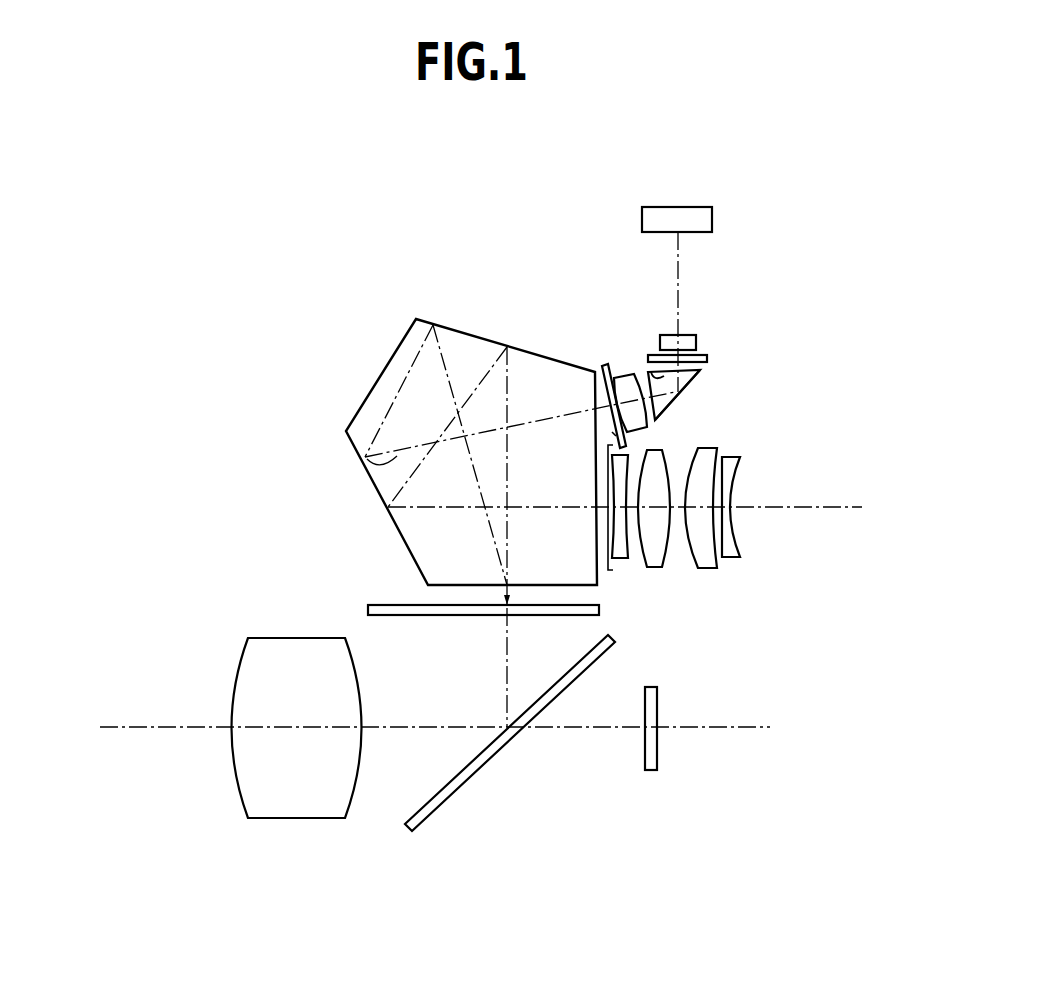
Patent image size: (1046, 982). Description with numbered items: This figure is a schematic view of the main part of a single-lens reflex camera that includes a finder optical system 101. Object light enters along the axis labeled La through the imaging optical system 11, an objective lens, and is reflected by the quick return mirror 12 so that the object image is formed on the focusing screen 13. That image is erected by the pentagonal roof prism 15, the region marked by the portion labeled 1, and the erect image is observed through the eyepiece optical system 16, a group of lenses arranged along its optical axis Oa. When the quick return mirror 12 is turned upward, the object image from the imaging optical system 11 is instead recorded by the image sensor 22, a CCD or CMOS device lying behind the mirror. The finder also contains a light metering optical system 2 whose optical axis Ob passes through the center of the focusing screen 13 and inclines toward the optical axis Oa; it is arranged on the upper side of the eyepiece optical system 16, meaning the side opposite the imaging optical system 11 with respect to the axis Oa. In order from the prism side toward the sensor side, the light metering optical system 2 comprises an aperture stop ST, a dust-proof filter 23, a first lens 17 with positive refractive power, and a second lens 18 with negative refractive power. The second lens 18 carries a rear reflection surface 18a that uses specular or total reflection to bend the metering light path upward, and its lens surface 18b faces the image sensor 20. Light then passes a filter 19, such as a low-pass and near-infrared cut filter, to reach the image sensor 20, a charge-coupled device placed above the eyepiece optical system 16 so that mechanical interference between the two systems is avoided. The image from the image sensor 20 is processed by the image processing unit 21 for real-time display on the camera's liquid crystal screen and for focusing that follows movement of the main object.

The finder optical system 101 is at (773, 193).
The objective optical system 1 is at (464, 434).
The light metering optical system 2 is at (657, 394).
The imaging optical system 11 is at (292, 644).
The quick return mirror 12 is at (497, 752).
The focusing screen 13 is at (600, 612).
The pentagonal roof prism 15 is at (413, 543).
The eyepiece optical system 16 is at (602, 578).
The first lens 17 is at (623, 376).
The second lens 18 is at (701, 345).
The reflection surface 18a is at (682, 396).
The lens surface 18b is at (654, 373).
The filter 19 is at (707, 359).
The image sensor 20 is at (690, 340).
The image processing unit 21 is at (678, 206).
The image sensor 22 is at (658, 752).
The dust-proof filter 23 is at (602, 367).
The aperture stop ST is at (628, 438).
The optical axis Ob is at (364, 461).
The optical axis Oa is at (815, 510).
The illumination optical axis La is at (158, 731).